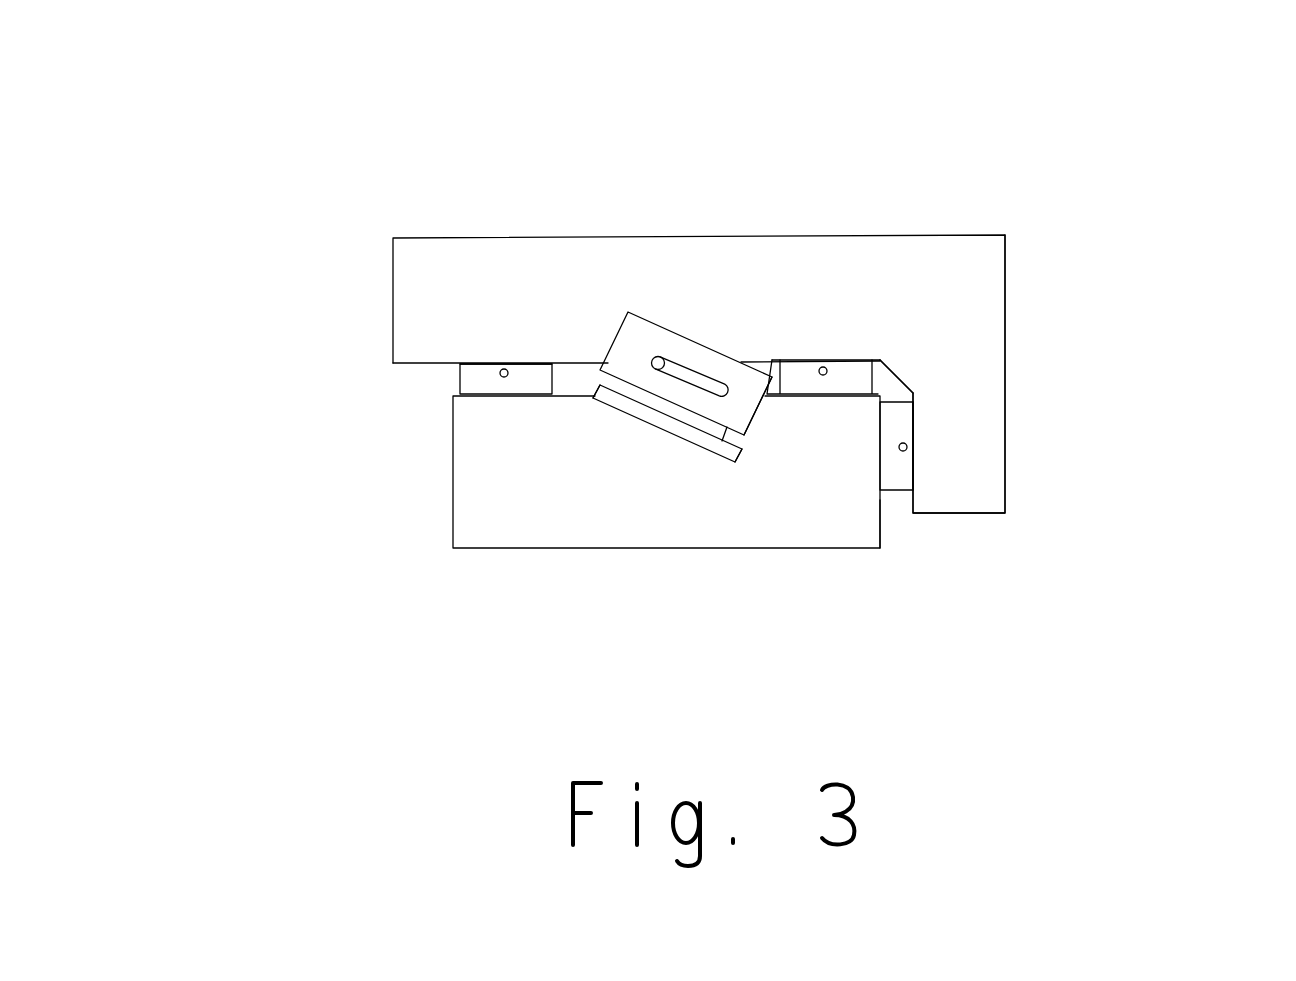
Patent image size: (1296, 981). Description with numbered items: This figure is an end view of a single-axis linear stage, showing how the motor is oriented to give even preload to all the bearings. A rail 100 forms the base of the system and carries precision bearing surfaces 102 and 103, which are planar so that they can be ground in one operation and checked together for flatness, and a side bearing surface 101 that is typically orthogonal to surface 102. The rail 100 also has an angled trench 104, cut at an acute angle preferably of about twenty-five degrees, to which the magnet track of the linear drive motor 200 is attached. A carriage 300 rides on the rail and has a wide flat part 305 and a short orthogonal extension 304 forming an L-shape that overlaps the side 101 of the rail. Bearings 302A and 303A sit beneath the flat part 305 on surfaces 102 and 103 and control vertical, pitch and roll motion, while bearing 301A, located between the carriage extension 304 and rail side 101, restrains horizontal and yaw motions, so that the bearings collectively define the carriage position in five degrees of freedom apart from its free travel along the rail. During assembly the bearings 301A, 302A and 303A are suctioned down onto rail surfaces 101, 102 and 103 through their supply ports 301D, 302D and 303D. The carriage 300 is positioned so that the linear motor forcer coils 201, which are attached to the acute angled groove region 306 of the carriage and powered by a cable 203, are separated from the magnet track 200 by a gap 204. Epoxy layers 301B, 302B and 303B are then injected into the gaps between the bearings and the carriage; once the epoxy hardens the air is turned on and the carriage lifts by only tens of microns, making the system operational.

The rail 100 is at (432, 586).
The bearing surface 101 is at (878, 500).
The bearing surface 102 is at (892, 385).
The bearing surface 103 is at (652, 367).
The angled trench 104 is at (737, 457).
The linear drive motor 200 is at (670, 427).
The linear motor forcer coils 201 is at (743, 409).
The cable 203 is at (606, 394).
The gap 204 is at (747, 444).
The carriage 300 is at (470, 170).
The bearing 301A is at (902, 427).
The epoxy layer 301B is at (913, 448).
The supply port 301D is at (900, 453).
The bearing 302A is at (787, 360).
The epoxy layer 302B is at (852, 372).
The supply port 302D is at (821, 366).
The bearing 303A is at (470, 385).
The epoxy layer 303B is at (490, 365).
The supply port 303D is at (504, 377).
The short orthogonal extension 304 is at (988, 356).
The wide flat part 305 is at (428, 268).
The acute angled groove region 306 is at (667, 329).